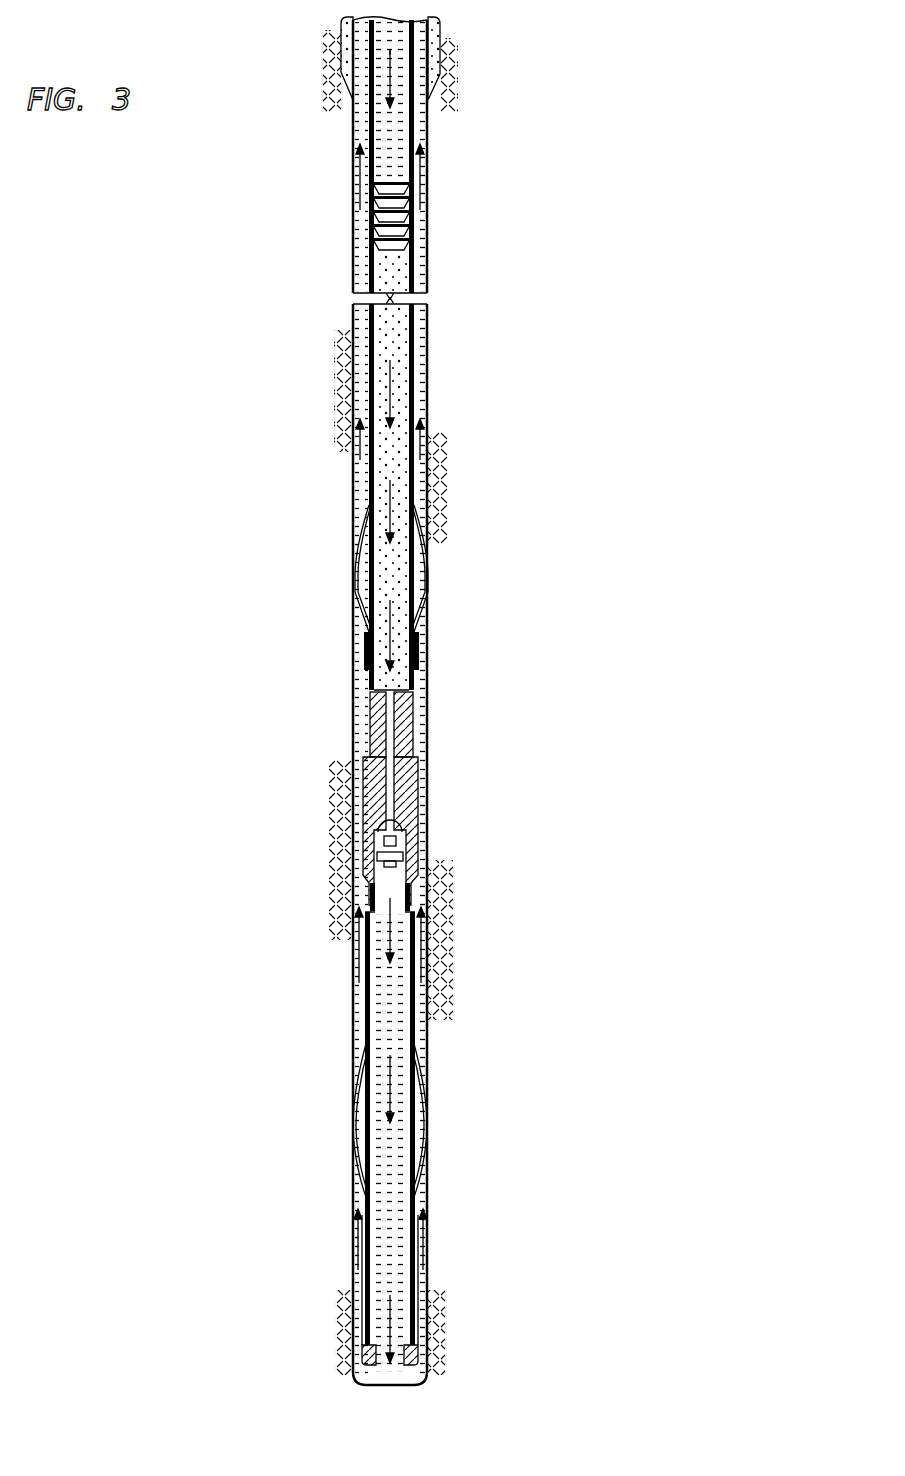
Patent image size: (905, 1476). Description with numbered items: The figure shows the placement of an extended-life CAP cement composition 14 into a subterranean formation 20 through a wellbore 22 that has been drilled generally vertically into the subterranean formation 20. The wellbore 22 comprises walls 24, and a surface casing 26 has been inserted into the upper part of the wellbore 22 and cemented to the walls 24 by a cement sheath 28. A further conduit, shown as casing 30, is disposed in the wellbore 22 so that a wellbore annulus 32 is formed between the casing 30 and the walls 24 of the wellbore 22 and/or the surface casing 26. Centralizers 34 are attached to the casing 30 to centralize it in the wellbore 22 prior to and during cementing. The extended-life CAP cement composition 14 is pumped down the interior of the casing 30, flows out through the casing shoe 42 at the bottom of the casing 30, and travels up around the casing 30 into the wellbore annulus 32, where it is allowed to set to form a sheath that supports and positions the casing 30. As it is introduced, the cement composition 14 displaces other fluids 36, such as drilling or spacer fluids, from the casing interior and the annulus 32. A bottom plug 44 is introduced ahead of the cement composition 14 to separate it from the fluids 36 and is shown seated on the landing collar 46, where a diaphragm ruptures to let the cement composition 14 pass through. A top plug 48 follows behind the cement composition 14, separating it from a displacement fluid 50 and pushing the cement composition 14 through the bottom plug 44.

The extended-life CAP cement composition 14 is at (390, 380).
The subterranean formation 20 is at (548, 707).
The wellbore 22 is at (433, 525).
The walls 24 is at (425, 245).
The surface casing 26 is at (443, 26).
The cement sheath 28 is at (450, 52).
The casing 30 is at (414, 408).
The wellbore annulus 32 is at (362, 507).
The centralizers 34 is at (357, 1103).
The fluids 36 is at (388, 905).
The casing shoe 42 is at (360, 1305).
The bottom plug 44 is at (356, 712).
The landing collar 46 is at (357, 790).
The top plug 48 is at (369, 228).
The displacement fluid 50 is at (394, 75).